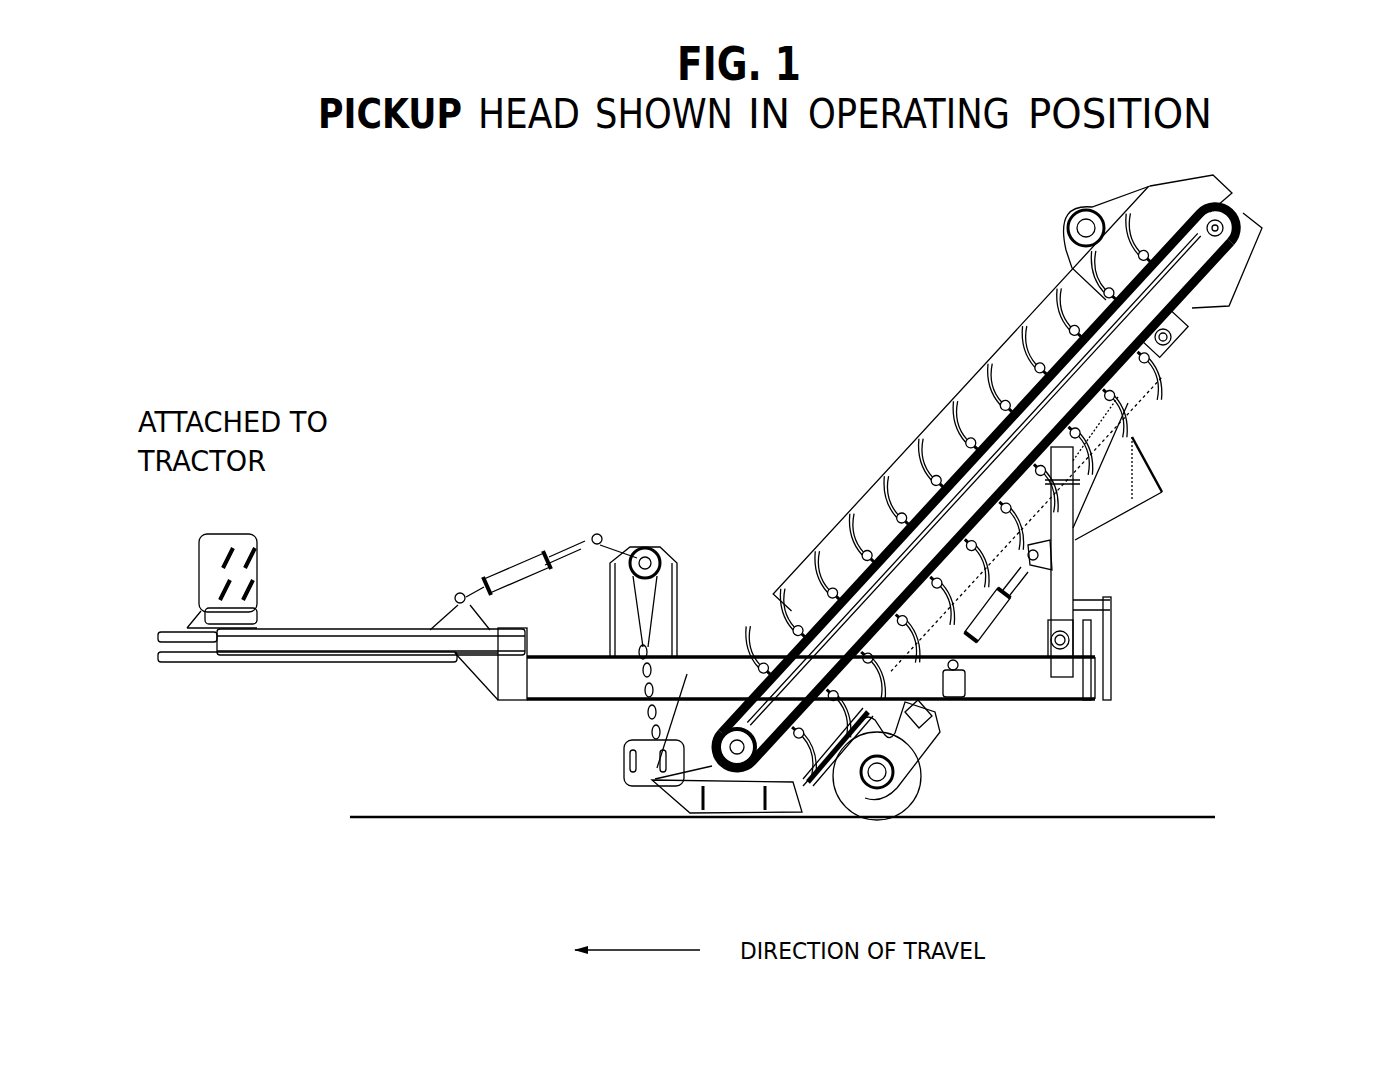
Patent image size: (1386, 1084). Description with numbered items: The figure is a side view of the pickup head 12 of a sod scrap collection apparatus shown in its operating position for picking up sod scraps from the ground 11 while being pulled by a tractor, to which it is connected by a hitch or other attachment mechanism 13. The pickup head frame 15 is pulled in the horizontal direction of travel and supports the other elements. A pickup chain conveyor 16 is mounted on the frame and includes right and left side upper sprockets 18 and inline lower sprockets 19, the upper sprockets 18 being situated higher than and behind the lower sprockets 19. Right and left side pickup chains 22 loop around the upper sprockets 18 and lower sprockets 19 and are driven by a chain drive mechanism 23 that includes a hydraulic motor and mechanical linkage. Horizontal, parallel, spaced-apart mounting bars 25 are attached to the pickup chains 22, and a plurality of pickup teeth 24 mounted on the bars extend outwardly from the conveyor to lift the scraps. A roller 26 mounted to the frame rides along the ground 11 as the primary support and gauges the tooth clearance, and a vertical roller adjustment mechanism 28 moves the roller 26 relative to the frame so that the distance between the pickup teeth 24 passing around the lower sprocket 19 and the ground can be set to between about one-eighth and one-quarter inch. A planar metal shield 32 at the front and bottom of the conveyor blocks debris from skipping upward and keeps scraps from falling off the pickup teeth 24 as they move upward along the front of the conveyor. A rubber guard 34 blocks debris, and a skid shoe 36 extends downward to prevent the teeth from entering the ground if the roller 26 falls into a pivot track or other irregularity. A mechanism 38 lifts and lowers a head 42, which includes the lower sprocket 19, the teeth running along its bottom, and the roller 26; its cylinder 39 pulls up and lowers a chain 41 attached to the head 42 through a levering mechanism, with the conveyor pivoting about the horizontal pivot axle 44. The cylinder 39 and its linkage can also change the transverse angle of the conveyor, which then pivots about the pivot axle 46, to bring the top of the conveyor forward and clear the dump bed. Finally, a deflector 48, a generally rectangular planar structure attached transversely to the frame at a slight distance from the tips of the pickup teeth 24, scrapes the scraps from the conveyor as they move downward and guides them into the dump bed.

The ground 11 is at (1134, 807).
The pickup head 12 is at (676, 233).
The hitch or other attachment mechanism 13 is at (276, 551).
The pickup head frame 15 is at (350, 645).
The pickup chain conveyor 16 is at (964, 343).
The upper sprockets 18 is at (1238, 238).
The lower sprockets 19 is at (734, 774).
The pickup chains 22 is at (1127, 377).
The chain drive mechanism 23 is at (1066, 214).
The pickup teeth 24 is at (948, 398).
The mounting bars 25 is at (910, 502).
The roller 26 is at (924, 801).
The vertical roller adjustment mechanism 28 is at (925, 780).
The shield 32 is at (687, 674).
The rubber guard 34 is at (648, 810).
The skid shoe 36 is at (700, 823).
The mechanism for lifting and lowering the head 38 is at (638, 502).
The cylinder 39 is at (541, 537).
The chain 41 is at (641, 729).
The head 42 is at (582, 782).
The pivot axle 44 is at (1180, 350).
The pivot axle 46 is at (1087, 628).
The deflector 48 is at (1152, 505).